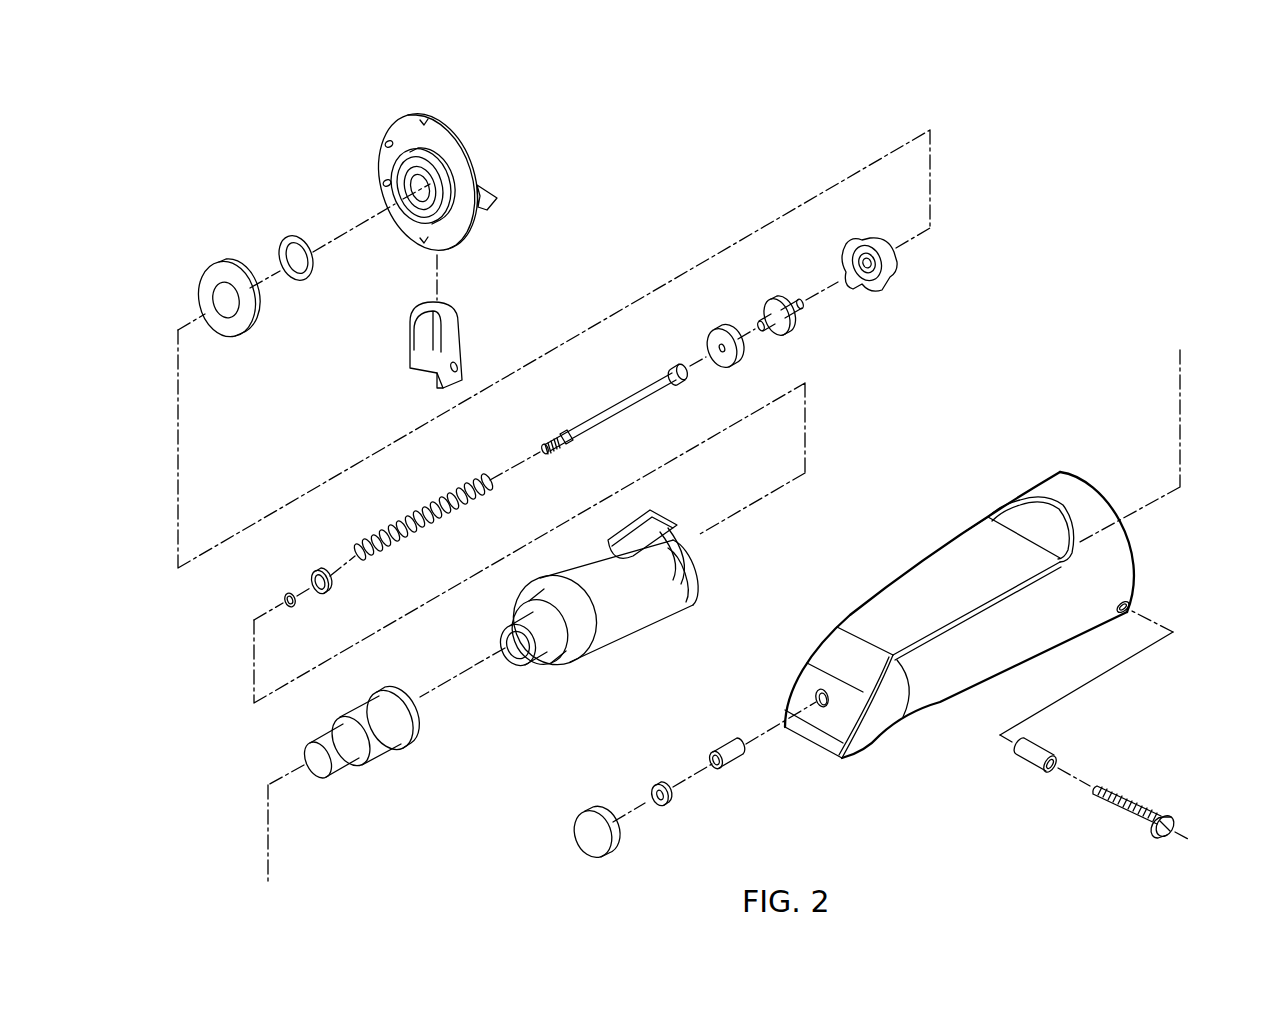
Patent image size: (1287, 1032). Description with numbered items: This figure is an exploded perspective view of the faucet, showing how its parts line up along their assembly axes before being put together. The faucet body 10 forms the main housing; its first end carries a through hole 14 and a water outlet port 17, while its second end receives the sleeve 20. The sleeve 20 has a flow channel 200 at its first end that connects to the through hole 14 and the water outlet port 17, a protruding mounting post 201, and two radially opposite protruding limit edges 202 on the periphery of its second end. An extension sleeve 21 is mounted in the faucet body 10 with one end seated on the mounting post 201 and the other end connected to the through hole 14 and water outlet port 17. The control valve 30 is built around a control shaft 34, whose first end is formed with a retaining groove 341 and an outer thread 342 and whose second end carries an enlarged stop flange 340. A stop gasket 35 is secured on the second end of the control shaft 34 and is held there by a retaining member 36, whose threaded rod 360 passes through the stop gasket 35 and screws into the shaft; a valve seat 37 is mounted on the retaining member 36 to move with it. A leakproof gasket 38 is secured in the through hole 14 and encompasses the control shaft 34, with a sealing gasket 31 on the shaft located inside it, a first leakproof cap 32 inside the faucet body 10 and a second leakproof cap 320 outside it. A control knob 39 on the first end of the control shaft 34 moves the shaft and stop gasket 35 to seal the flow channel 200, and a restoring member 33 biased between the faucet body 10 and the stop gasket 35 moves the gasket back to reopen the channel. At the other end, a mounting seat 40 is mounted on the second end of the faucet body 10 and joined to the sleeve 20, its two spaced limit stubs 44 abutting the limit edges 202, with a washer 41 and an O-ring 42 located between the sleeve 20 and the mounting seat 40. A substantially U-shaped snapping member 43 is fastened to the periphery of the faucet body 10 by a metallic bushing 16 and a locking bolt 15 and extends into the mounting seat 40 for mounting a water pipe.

The faucet body 10 is at (1085, 497).
The through hole 14 is at (817, 710).
The locking bolt 15 is at (1130, 795).
The metallic bushing 16 is at (1040, 753).
The water outlet port 17 is at (855, 763).
The sleeve 20 is at (660, 596).
The flow channel 200 is at (517, 653).
The mounting post 201 is at (512, 650).
The limit edges 202 is at (647, 524).
The extension sleeve 21 is at (367, 732).
The control valve 30 is at (913, 220).
The sealing gasket 31 is at (287, 594).
The first leakproof cap 32 is at (317, 574).
The second leakproof cap 320 is at (653, 787).
The restoring member 33 is at (413, 518).
The control shaft 34 is at (612, 410).
The stop flange 340 is at (687, 383).
The retaining groove 341 is at (567, 452).
The outer thread 342 is at (543, 450).
The stop gasket 35 is at (710, 334).
The retaining member 36 is at (784, 332).
The threaded rod 360 is at (763, 318).
The valve seat 37 is at (862, 240).
The leakproof gasket 38 is at (717, 750).
The control knob 39 is at (584, 813).
The mounting seat 40 is at (453, 165).
The washer 41 is at (207, 283).
The O-ring 42 is at (283, 243).
The snapping member 43 is at (414, 352).
The limit stubs 44 is at (380, 179).